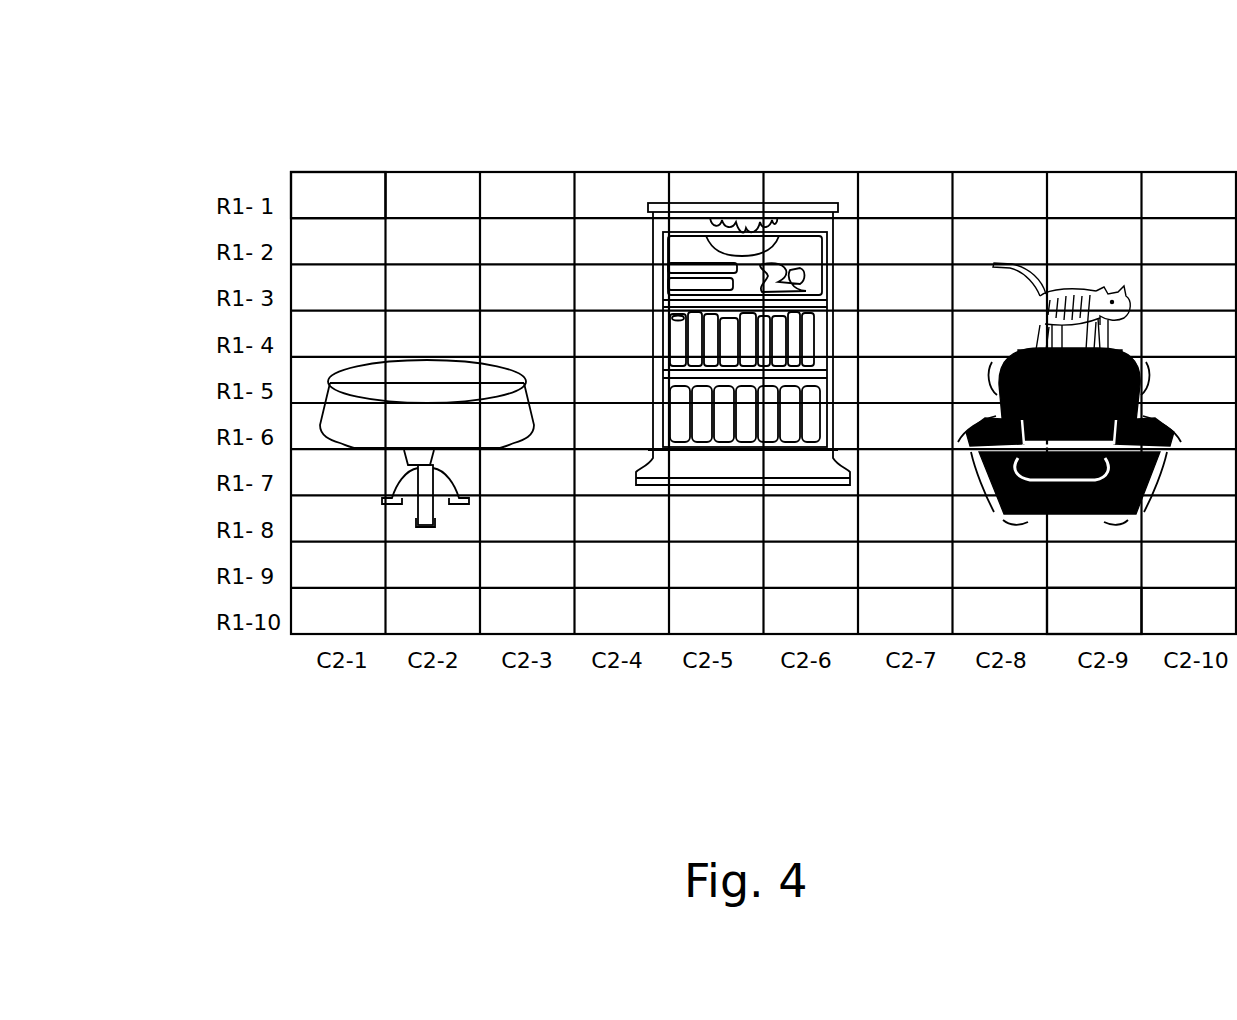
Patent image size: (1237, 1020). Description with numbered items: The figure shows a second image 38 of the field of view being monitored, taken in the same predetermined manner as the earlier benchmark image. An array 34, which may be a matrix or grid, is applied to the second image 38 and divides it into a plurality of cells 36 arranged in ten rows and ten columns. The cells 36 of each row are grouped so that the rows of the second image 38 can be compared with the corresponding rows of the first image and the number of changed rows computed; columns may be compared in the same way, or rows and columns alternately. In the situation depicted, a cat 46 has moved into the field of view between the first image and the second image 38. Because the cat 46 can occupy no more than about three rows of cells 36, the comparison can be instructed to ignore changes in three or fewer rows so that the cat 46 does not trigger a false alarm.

The array 34 is at (853, 614).
The cells 36 is at (338, 198).
The second image 38 is at (948, 66).
The cat 46 is at (1095, 291).